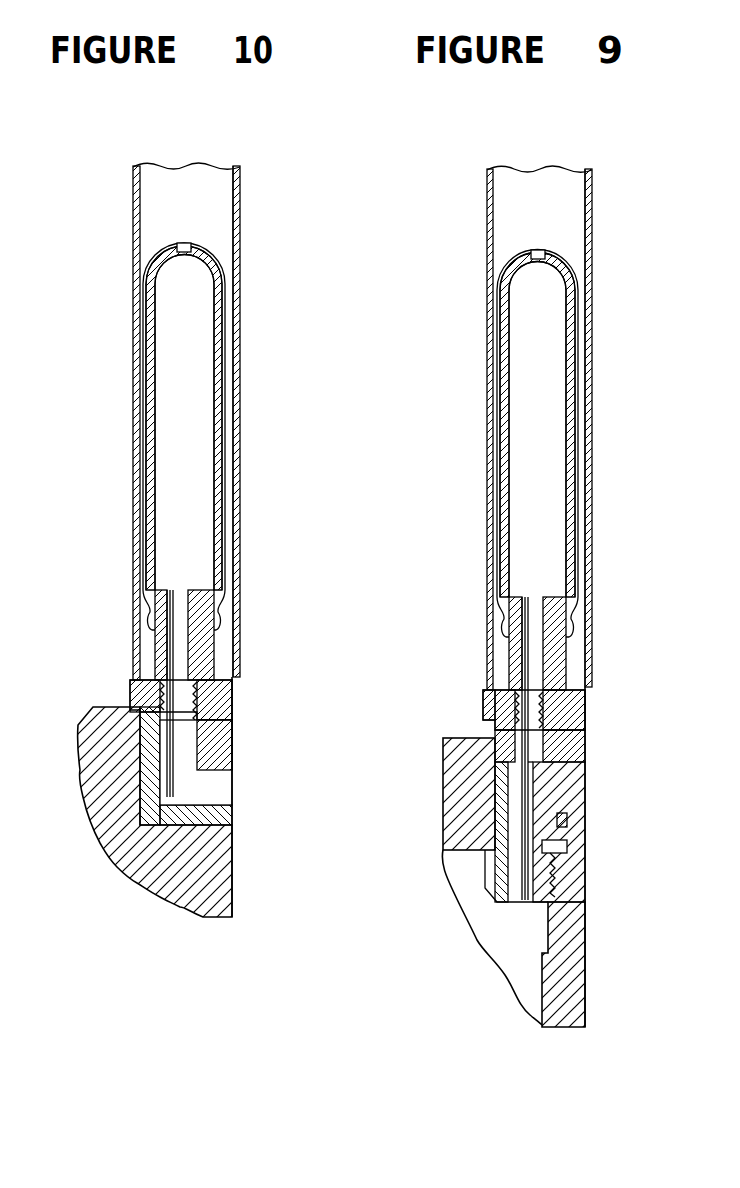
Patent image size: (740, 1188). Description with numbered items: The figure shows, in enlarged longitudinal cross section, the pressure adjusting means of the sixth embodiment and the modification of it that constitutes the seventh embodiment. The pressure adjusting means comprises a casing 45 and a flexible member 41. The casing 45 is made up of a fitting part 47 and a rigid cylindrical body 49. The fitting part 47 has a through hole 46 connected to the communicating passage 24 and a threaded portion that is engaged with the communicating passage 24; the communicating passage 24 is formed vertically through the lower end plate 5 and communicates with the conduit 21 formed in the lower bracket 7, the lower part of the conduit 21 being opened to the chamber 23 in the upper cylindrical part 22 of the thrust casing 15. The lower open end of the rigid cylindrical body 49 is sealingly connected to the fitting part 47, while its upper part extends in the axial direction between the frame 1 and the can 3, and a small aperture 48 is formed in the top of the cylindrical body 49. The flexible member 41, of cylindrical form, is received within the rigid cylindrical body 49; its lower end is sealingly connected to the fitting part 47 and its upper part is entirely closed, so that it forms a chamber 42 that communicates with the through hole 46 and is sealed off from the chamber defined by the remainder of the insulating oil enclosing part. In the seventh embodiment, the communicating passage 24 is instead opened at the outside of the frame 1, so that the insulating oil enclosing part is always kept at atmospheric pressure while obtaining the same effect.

In FIG. 10, the frame 1 is at (240, 209).
In FIG. 9, the frame 1 is at (592, 214).
In FIG. 10, the can 3 is at (133, 222).
In FIG. 9, the can 3 is at (487, 227).
In FIG. 10, the lower end plate 5 is at (210, 705).
In FIG. 9, the lower end plate 5 is at (570, 700).
In FIG. 10, the lower bracket 7 is at (218, 880).
In FIG. 9, the lower bracket 7 is at (550, 790).
In FIG. 9, the thrust casing 15 is at (585, 895).
In FIG. 9, the conduit 21 is at (533, 834).
In FIG. 9, the upper cylindrical part 22 is at (585, 950).
In FIG. 9, the chamber 23 is at (522, 947).
In FIG. 10, the communicating passage 24 is at (190, 756).
In FIG. 9, the communicating passage 24 is at (547, 752).
In FIG. 10, the flexible member 41 is at (217, 368).
In FIG. 9, the flexible member 41 is at (572, 392).
In FIG. 10, the chamber 42 is at (197, 435).
In FIG. 9, the chamber 42 is at (540, 462).
In FIG. 10, the casing 45 is at (223, 478).
In FIG. 9, the casing 45 is at (578, 508).
In FIG. 10, the through hole 46 is at (188, 606).
In FIG. 9, the through hole 46 is at (540, 616).
In FIG. 10, the fitting part 47 is at (205, 652).
In FIG. 9, the fitting part 47 is at (560, 660).
In FIG. 10, the small aperture 48 is at (182, 246).
In FIG. 9, the small aperture 48 is at (536, 252).
In FIG. 10, the rigid cylindrical body 49 is at (223, 333).
In FIG. 9, the rigid cylindrical body 49 is at (578, 348).